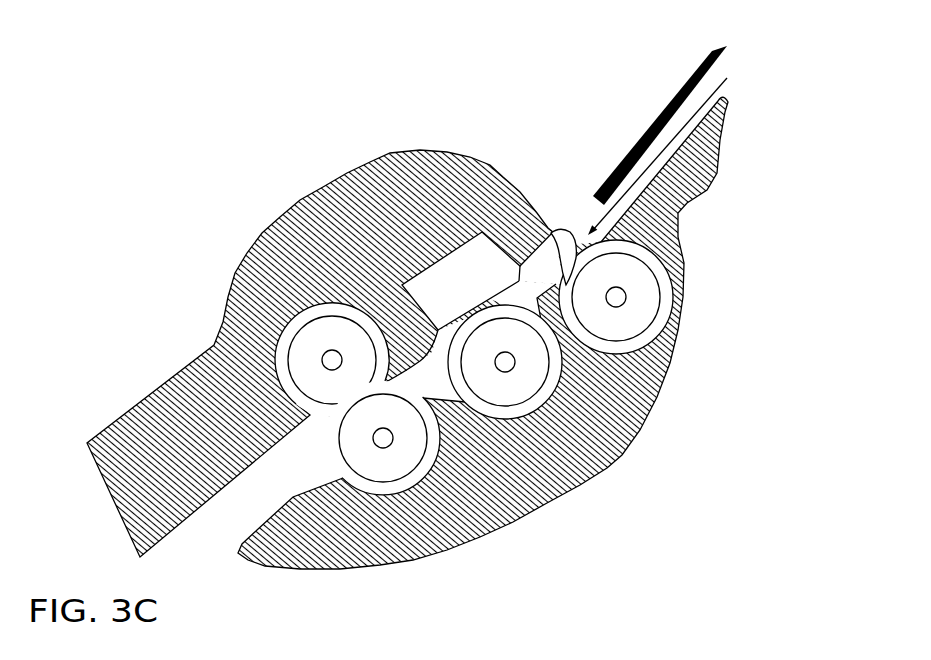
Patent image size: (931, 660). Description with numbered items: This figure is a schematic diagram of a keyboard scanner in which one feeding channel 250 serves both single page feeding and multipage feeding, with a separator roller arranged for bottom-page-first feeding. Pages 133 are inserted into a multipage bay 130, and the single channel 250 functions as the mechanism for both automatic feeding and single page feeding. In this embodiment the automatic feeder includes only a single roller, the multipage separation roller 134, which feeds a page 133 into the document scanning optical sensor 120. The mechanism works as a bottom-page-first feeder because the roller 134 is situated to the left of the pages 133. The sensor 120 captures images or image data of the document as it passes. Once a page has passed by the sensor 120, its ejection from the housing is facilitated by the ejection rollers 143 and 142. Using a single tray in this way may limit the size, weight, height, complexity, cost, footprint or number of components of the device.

The pages 133 is at (724, 50).
The channel 250 is at (598, 226).
The multipage separation roller 134 is at (652, 293).
The multipage bay 130 is at (528, 383).
The document scanning optical sensor 120 is at (440, 332).
The ejection roller 143 is at (332, 393).
The ejection roller 142 is at (355, 448).